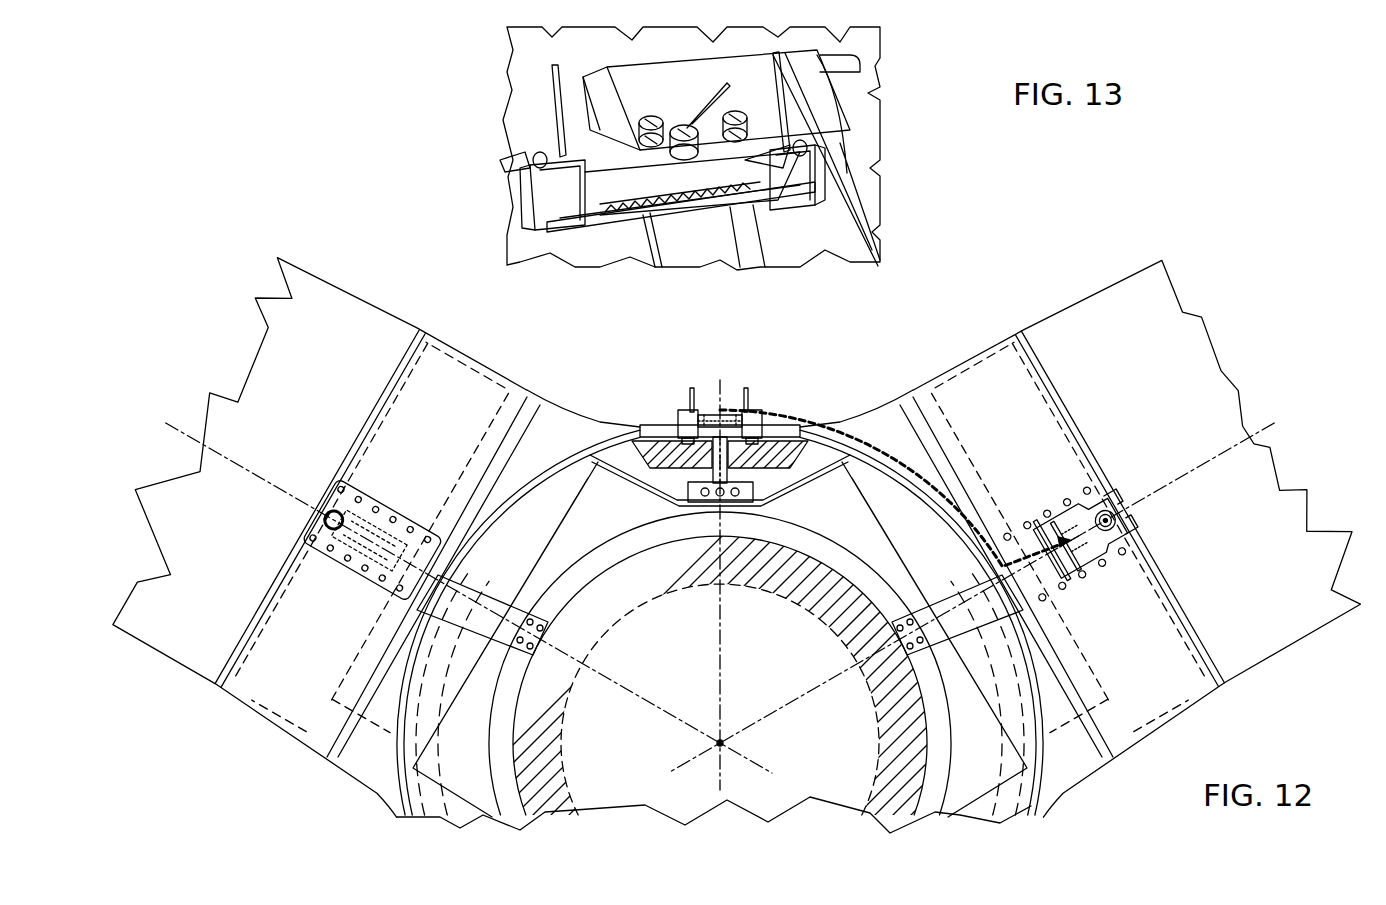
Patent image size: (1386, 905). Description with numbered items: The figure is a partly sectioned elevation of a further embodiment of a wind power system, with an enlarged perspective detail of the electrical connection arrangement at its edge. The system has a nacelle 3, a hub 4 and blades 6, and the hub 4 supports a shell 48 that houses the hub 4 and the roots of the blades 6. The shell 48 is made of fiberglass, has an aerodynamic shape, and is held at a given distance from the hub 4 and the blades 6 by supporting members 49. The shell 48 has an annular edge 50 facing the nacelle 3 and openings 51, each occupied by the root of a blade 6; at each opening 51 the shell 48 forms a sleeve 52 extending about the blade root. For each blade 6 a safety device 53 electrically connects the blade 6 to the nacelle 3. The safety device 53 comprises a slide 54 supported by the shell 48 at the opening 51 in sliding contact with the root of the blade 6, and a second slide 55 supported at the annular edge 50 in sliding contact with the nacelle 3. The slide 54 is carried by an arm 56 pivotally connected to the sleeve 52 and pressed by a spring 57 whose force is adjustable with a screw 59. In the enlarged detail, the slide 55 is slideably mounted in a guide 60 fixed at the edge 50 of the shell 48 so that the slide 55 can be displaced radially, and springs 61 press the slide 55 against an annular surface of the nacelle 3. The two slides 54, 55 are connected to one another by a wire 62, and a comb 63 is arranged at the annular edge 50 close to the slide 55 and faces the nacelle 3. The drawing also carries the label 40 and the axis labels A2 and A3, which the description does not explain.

In FIG. 12, the nacelle 3 is at (785, 463).
In FIG. 12, the hub 4 is at (905, 745).
In FIG. 12, the blades 6 is at (270, 683).
In FIG. 13, the support structure 40 is at (862, 88).
In FIG. 12, the shell 48 is at (603, 428).
In FIG. 12, the supporting members 49 is at (505, 640).
In FIG. 13, the annular edge 50 is at (862, 178).
In FIG. 12, the annular edge 50 is at (627, 428).
In FIG. 12, the openings 51 is at (292, 530).
In FIG. 12, the sleeve 52 is at (473, 362).
In FIG. 12, the safety device 53 is at (820, 387).
In FIG. 12, the slide 54 is at (1125, 525).
In FIG. 13, the slide 55 is at (697, 222).
In FIG. 12, the slide 55 is at (763, 490).
In FIG. 12, the arm 56 is at (1080, 545).
In FIG. 12, the spring 57 is at (1110, 515).
In FIG. 12, the screw 59 is at (1108, 528).
In FIG. 13, the guide 60 is at (553, 207).
In FIG. 12, the guide 60 is at (685, 420).
In FIG. 13, the springs 61 is at (540, 163).
In FIG. 12, the springs 61 is at (692, 405).
In FIG. 12, the wire 62 is at (850, 425).
In FIG. 13, the comb 63 is at (626, 212).
In FIG. 12, the comb 63 is at (718, 470).
In FIG. 12, the axis A2 is at (720, 743).
In FIG. 12, the axis A3 is at (255, 470).